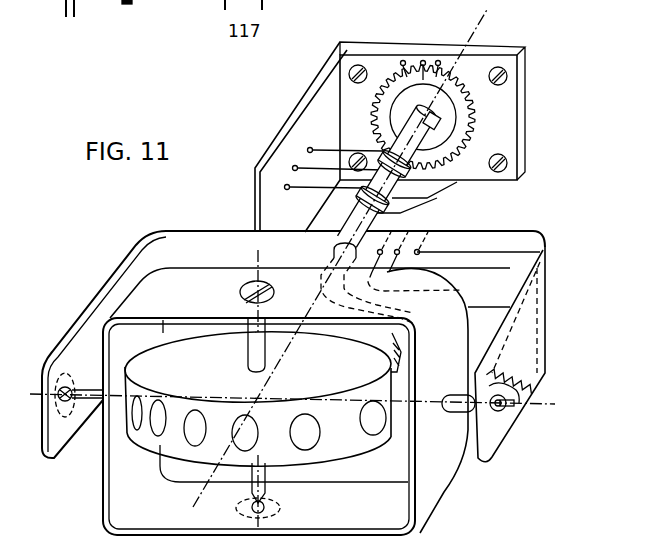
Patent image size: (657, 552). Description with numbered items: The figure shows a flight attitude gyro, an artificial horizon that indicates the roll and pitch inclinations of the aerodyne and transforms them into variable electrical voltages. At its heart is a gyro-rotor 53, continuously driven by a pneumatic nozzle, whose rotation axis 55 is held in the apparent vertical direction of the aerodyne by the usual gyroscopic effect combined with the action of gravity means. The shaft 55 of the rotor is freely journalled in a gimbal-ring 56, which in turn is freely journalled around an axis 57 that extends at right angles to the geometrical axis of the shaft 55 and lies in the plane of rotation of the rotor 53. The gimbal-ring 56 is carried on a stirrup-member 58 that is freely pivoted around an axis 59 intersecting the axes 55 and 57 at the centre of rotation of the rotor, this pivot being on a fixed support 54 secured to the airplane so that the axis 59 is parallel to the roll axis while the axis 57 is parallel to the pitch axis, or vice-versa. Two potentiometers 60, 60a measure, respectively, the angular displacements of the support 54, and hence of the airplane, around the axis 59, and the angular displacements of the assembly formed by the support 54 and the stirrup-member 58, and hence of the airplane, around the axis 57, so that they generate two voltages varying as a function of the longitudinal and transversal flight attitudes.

The gyro-rotor 53 is at (181, 444).
The support 54 is at (524, 119).
The rotation axis 55 is at (263, 469).
The gimbal-ring 56 is at (443, 471).
The axis 57 is at (402, 406).
The stirrup-member 58 is at (537, 306).
The axis 59 is at (487, 8).
The potentiometer 60 is at (403, 66).
The potentiometer 60a is at (533, 388).